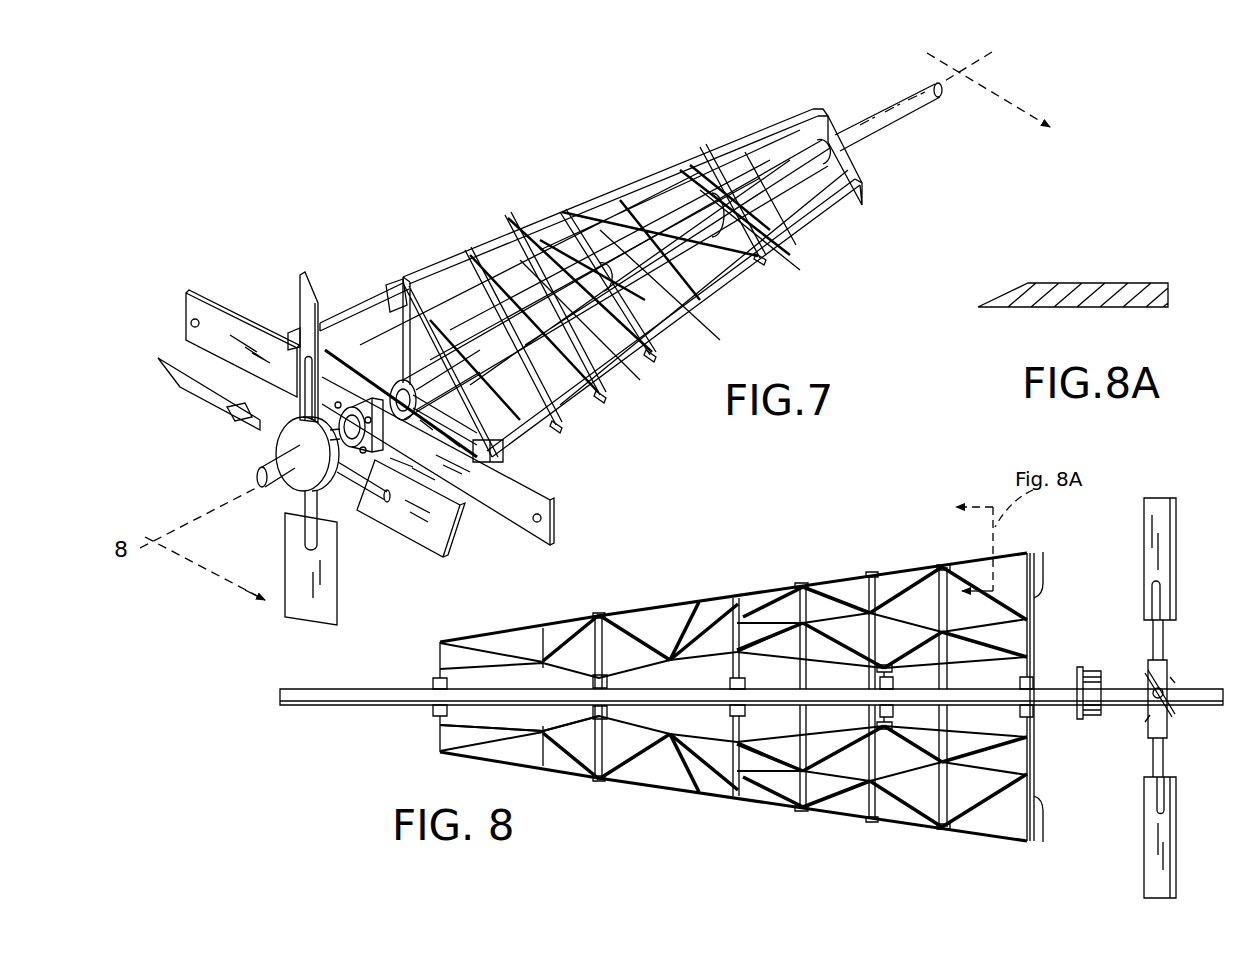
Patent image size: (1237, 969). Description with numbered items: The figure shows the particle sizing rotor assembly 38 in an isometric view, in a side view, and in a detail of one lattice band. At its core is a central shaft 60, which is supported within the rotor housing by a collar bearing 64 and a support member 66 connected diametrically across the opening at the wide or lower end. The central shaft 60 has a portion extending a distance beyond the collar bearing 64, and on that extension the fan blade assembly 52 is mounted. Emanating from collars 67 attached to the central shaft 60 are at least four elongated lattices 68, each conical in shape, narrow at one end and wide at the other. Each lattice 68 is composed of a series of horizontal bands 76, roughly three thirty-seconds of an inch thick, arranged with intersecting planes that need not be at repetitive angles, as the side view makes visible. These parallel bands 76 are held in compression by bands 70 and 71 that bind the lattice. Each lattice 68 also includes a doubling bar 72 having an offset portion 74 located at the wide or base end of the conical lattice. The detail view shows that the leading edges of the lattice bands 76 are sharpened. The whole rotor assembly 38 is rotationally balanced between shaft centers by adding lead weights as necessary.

In FIG. 7, the rotor assembly 38 is at (458, 192).
In FIG. 7, the fan blade assembly 52 is at (300, 485).
In FIG. 8, the fan blade assembly 52 is at (1172, 722).
In FIG. 7, the central shaft 60 is at (863, 122).
In FIG. 8, the central shaft 60 is at (372, 689).
In FIG. 7, the collar bearing 64 is at (360, 380).
In FIG. 8, the collar bearing 64 is at (1100, 672).
In FIG. 7, the support member 66 is at (237, 315).
In FIG. 8, the collar 67 is at (435, 712).
In FIG. 7, the elongated lattice 68 is at (647, 180).
In FIG. 7, the band 70 is at (768, 258).
In FIG. 8, the band 70 is at (599, 615).
In FIG. 7, the band 71 is at (538, 300).
In FIG. 8, the band 71 is at (604, 676).
In FIG. 7, the doubling bar 72 is at (366, 375).
In FIG. 8, the doubling bar 72 is at (1035, 660).
In FIG. 7, the offset portion 74 is at (393, 292).
In FIG. 8, the offset portion 74 is at (1045, 587).
In FIG. 8, the horizontal band 76 is at (660, 785).
In FIG. 8A, the horizontal band 76 is at (1078, 283).